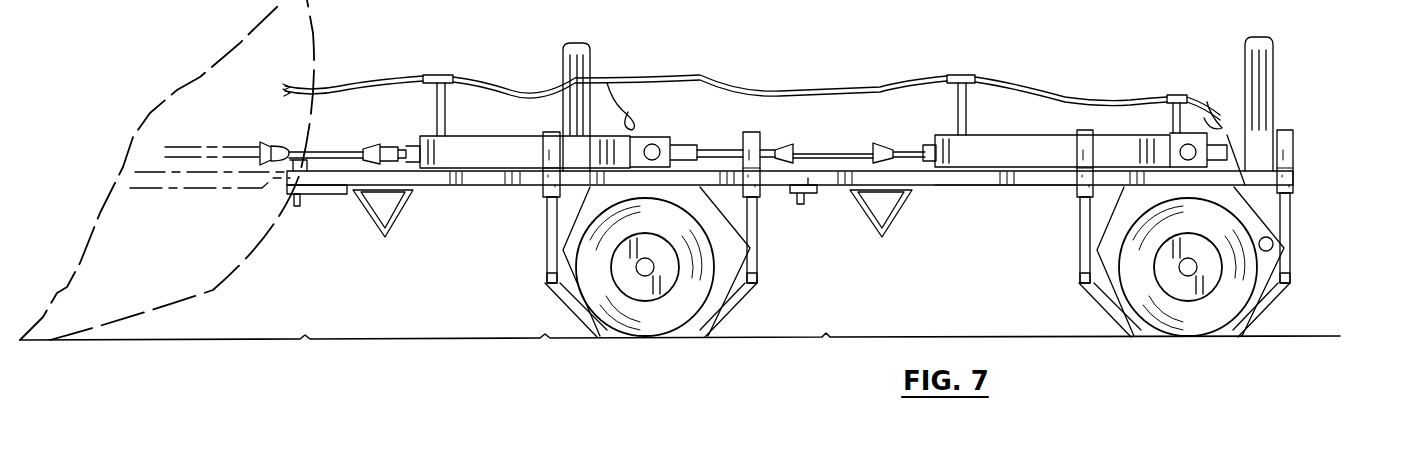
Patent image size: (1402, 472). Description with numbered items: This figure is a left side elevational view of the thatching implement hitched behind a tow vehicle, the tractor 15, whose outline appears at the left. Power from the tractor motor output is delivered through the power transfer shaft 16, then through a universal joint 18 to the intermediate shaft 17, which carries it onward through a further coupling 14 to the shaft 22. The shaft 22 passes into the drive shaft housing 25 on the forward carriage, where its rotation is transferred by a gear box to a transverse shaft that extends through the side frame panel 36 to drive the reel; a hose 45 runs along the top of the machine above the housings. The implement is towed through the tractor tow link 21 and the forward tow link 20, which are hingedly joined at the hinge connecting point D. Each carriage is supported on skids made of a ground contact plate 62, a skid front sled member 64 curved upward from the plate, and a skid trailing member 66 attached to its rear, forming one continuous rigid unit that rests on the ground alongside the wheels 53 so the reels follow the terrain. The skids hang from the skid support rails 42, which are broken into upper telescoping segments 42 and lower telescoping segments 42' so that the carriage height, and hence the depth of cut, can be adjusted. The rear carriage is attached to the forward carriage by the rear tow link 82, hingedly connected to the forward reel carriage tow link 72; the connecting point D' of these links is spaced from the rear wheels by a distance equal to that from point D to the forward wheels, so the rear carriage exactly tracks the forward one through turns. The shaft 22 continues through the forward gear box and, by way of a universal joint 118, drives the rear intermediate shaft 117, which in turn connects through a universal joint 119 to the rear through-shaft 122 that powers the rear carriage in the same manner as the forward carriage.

The tractor 15 is at (123, 108).
The power transfer shaft 16 is at (192, 149).
The universal joint 18 is at (278, 146).
The intermediate shaft 17 is at (338, 151).
The coupling 14 is at (376, 146).
The shaft 22 is at (399, 152).
The drive shaft housing 25 is at (465, 142).
The skid support rail 42 is at (925, 136).
The hydraulic hose 45 is at (363, 86).
The tractor tow link 21 is at (445, 186).
The side frame panel 36 is at (578, 212).
The lower skid support rail 42' is at (931, 238).
The skid front sled member 64 is at (565, 315).
The skid trailing member 66 is at (738, 315).
The ground contact plate 62 is at (620, 332).
The wheels 53 is at (677, 325).
The universal joint 118 is at (782, 150).
The rear intermediate shaft 117 is at (845, 155).
The universal joint 119 is at (882, 145).
The rear through-shaft 122 is at (920, 150).
The forward reel carriage tow link 72 is at (764, 188).
The rear tow link 82 is at (990, 183).
The forward tow link 20 is at (233, 187).
The hinge connecting point D is at (307, 222).
The distance D' is at (832, 212).